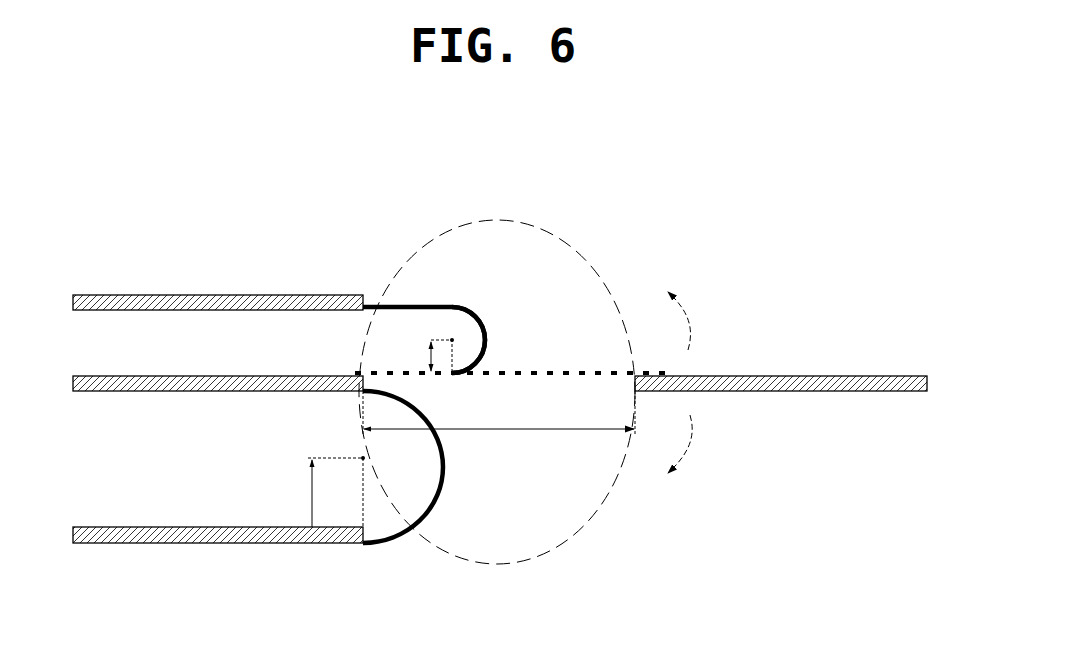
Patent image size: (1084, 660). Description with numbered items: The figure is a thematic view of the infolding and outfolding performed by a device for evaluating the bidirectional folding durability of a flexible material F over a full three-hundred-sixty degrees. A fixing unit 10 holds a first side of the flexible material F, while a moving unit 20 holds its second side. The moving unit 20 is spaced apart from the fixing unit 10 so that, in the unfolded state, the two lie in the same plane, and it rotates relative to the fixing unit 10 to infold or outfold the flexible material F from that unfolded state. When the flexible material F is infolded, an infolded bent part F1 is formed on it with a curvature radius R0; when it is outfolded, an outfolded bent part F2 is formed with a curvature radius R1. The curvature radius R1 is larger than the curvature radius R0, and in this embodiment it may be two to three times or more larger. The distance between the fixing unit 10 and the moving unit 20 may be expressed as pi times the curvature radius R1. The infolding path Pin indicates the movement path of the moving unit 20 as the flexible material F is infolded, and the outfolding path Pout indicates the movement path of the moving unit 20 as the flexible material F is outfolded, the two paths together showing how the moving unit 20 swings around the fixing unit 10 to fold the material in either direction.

The moving unit 20 is at (177, 295).
The fixing unit 10 is at (178, 392).
The flexible material F is at (392, 302).
The infolded bent part F1 is at (490, 327).
The outfolded bent part F2 is at (438, 505).
The curvature radius of infolded bent part R0 is at (425, 355).
The curvature radius of outfolded bent part R1 is at (322, 491).
The infolding path Pin is at (587, 257).
The outfolding path Pout is at (588, 505).